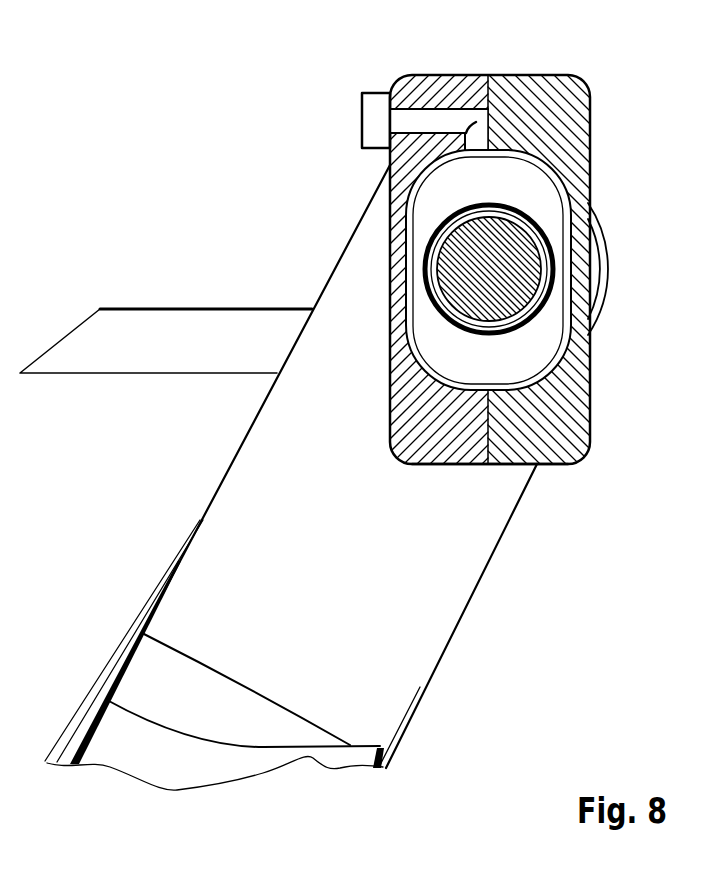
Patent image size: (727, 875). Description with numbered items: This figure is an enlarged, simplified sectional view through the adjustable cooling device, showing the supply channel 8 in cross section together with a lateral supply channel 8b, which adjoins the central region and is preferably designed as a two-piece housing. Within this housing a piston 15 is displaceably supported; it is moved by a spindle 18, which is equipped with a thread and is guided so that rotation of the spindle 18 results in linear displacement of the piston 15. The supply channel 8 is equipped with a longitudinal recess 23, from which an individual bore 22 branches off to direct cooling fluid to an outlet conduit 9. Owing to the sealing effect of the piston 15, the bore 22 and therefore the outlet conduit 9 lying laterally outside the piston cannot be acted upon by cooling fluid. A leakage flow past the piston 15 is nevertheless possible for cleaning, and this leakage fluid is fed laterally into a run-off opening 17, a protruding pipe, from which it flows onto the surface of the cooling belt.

The supply channel 8 is at (585, 112).
The lateral supply channel 8b is at (577, 408).
The outlet conduit 9 is at (435, 120).
The piston 15 is at (510, 178).
The run-off opening 17 is at (170, 308).
The spindle 18 is at (533, 270).
The bore 22 is at (480, 142).
The longitudinal recess 23 is at (570, 335).